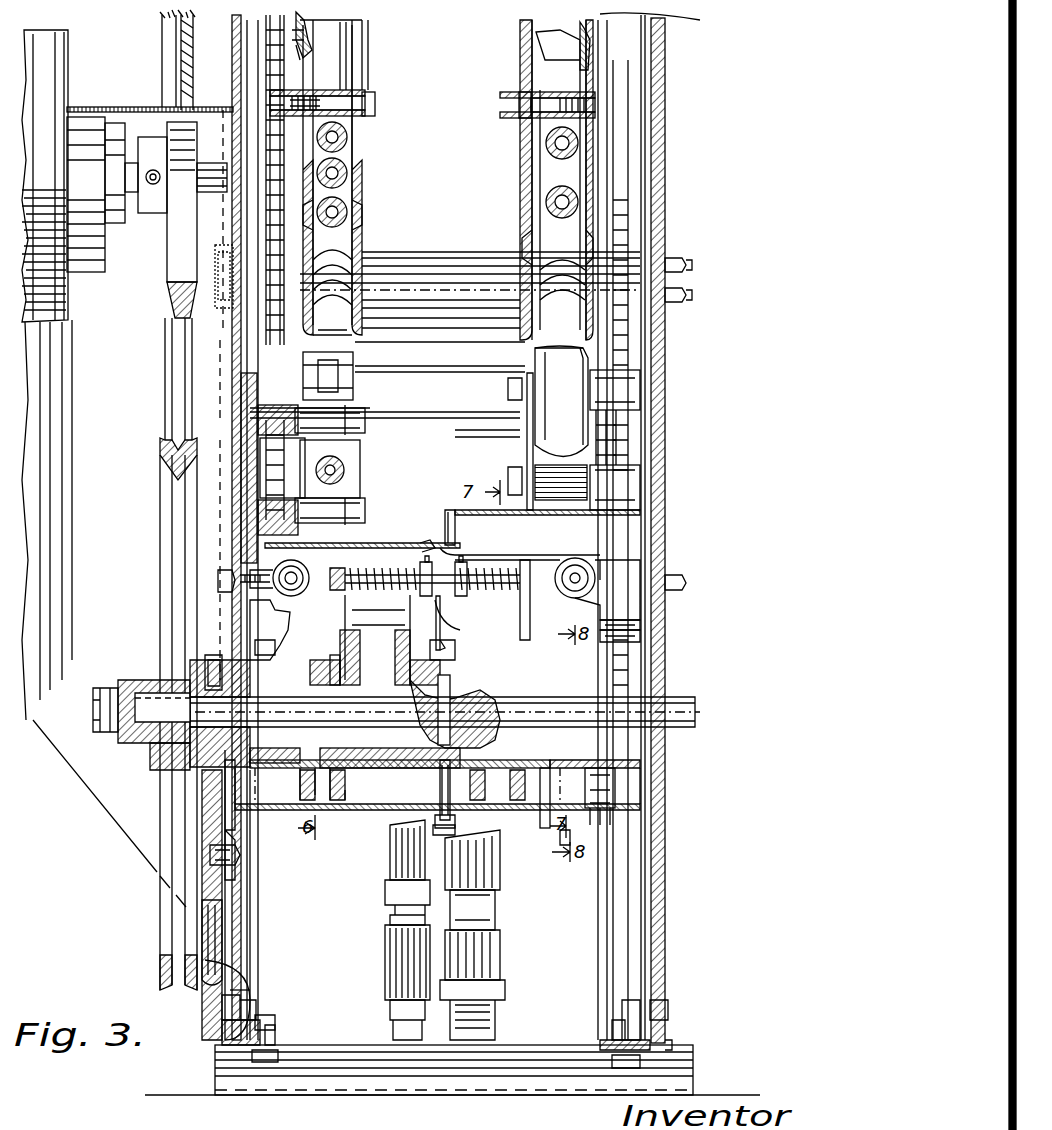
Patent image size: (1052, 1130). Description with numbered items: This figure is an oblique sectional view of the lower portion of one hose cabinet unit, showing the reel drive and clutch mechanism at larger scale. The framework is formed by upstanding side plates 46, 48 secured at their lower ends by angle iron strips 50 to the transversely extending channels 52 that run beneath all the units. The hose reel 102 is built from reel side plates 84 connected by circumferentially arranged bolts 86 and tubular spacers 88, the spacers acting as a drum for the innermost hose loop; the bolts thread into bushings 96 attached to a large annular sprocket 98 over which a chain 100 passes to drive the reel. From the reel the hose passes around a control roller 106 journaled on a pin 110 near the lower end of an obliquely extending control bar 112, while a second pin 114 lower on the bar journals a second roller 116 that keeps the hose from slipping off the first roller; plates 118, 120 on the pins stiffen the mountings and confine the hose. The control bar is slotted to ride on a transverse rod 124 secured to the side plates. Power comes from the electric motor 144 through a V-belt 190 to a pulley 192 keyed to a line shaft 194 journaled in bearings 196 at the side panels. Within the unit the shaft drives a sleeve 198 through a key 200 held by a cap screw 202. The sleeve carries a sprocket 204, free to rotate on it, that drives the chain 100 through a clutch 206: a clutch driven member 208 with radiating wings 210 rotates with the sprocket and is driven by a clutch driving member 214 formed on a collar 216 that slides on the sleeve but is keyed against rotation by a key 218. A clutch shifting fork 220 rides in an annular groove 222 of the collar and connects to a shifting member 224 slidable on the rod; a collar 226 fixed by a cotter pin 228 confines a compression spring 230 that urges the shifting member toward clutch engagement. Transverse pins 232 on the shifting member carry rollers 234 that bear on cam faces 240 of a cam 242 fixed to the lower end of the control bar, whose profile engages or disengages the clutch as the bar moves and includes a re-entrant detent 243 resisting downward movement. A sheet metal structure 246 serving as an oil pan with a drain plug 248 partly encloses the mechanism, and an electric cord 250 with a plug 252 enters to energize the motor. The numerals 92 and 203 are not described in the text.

The side plate 46 is at (195, 333).
The side plate 48 is at (665, 905).
The angle iron strips 50 is at (282, 1045).
The channels 52 is at (325, 1085).
The reel side plates 84 is at (352, 60).
The bolts 86 is at (378, 100).
The tubular spacers 88 is at (350, 82).
The cable clamp 92 is at (297, 14).
The bushings 96 is at (320, 75).
The annular sprocket 98 is at (348, 128).
The chain 100 is at (290, 337).
The hose reel 102 is at (380, 170).
The control roller 106 is at (355, 395).
The pin 110 is at (270, 428).
The control bar 112 is at (648, 142).
The pin 114 is at (250, 523).
The second roller 116 is at (368, 476).
The plate 118 is at (235, 488).
The plate 120 is at (525, 437).
The rod 124 is at (460, 630).
The electric motor 144 is at (64, 95).
The V-belt 190 is at (178, 358).
The pulley 192 is at (178, 612).
The line shaft 194 is at (150, 715).
The bearings 196 is at (660, 688).
The sleeve 198 is at (340, 825).
The key 200 is at (470, 680).
The cap screw 202 is at (438, 765).
The lever 203 is at (288, 626).
The sprocket 204 is at (300, 820).
The clutch 206 is at (310, 830).
The clutch driven member 208 is at (575, 812).
The wings 210 is at (640, 648).
The clutch driving member 214 is at (437, 715).
The collar 216 is at (375, 657).
The key 218 is at (362, 668).
The clutch shifting fork 220 is at (356, 620).
The annular groove 222 is at (318, 778).
The shifting member 224 is at (365, 525).
The collar 226 is at (385, 555).
The cotter pin 228 is at (440, 648).
The compression spring 230 is at (380, 530).
The pins 232 is at (275, 605).
The roller 234 is at (580, 560).
The cam faces 240 is at (275, 625).
The cam 242 is at (300, 640).
The detent 243 is at (620, 595).
The sheet metal structure 246 is at (495, 795).
The drain plug 248 is at (460, 835).
The electric cord 250 is at (230, 940).
The plug 252 is at (220, 1005).